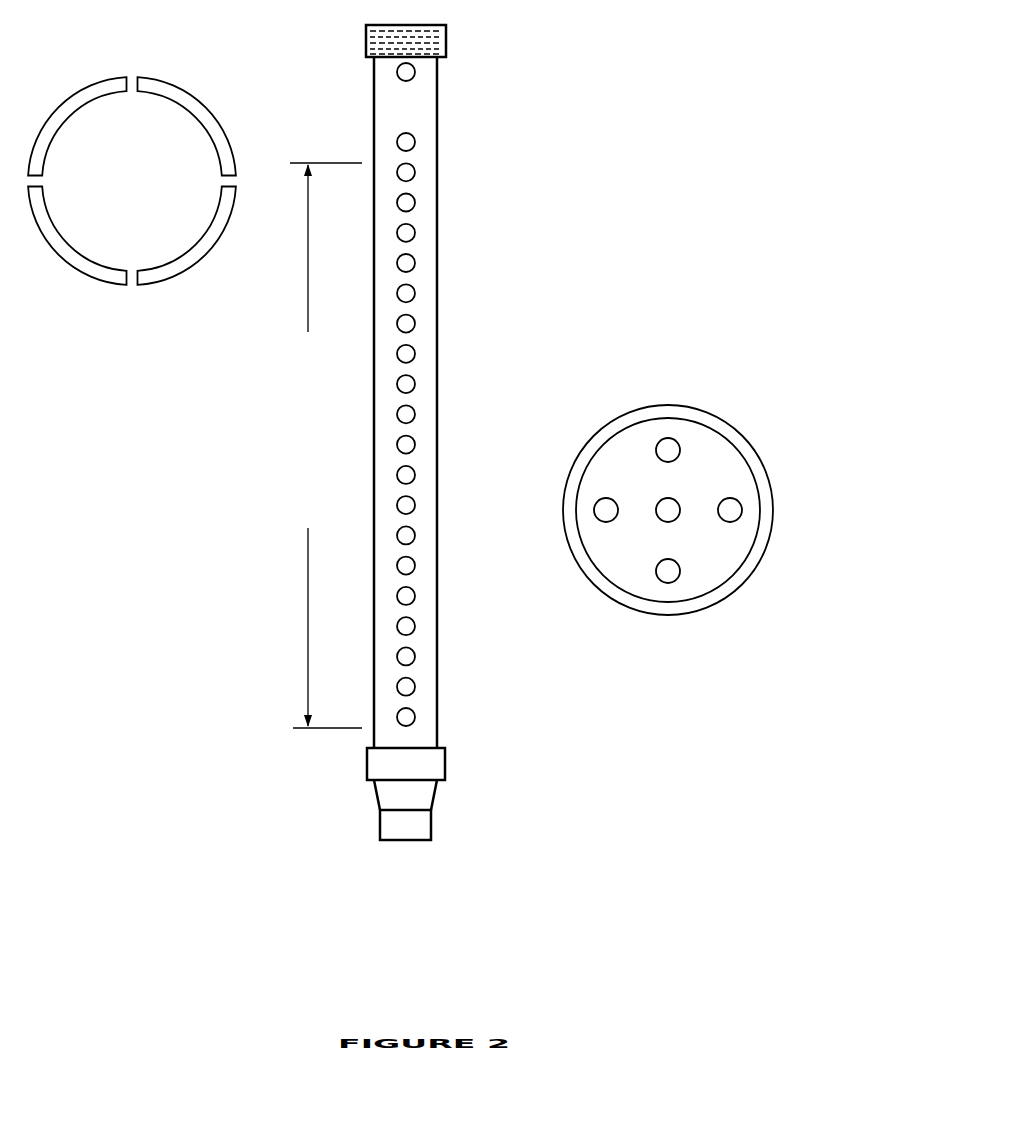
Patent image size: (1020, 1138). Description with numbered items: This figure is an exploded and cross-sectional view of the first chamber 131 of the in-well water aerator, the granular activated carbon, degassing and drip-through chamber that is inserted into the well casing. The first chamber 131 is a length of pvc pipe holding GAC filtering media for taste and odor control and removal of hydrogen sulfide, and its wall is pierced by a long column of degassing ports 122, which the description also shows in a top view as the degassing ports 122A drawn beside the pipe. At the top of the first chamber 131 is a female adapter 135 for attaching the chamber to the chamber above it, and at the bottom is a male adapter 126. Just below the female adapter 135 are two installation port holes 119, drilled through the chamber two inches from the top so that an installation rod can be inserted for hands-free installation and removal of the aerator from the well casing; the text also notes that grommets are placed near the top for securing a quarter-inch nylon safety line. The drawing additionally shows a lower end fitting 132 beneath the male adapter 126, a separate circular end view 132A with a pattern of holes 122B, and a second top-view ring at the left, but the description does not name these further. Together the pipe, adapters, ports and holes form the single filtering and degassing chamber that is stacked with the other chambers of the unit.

The installation port holes 119 is at (417, 72).
The degassing ports 122 is at (419, 176).
The degassing ports (top view) 122A is at (131, 82).
The disc holes 122B is at (672, 462).
The male adapter 126 is at (440, 796).
The first chamber 131 is at (440, 665).
The bottom fitting 132 is at (437, 827).
The disc 132A is at (776, 507).
The female adapter 135 is at (448, 41).